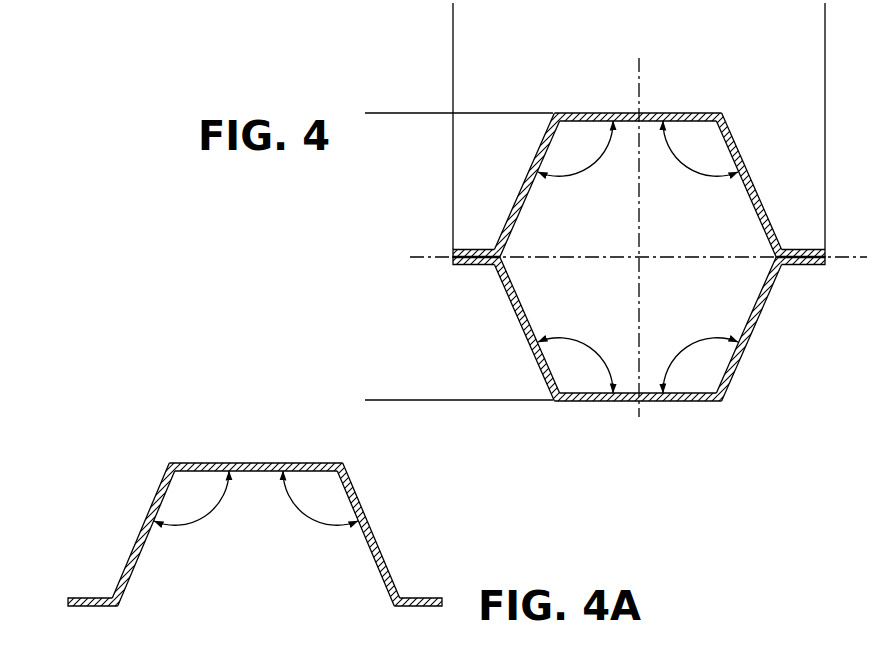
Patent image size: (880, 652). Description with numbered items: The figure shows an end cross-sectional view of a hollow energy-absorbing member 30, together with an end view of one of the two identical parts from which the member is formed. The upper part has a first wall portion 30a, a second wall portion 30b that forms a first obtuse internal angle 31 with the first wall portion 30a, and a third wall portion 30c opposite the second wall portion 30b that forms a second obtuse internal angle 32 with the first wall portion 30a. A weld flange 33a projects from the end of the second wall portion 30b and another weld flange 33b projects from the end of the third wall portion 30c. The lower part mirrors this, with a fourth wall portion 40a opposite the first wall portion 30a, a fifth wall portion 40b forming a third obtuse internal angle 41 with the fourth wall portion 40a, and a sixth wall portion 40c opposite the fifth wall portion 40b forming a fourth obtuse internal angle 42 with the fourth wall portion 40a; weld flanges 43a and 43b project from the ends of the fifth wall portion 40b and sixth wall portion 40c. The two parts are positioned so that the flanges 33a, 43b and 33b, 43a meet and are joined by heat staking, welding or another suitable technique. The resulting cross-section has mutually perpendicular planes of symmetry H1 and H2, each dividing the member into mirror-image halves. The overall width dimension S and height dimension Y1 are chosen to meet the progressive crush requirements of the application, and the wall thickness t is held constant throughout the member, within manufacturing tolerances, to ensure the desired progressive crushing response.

In FIG. 4, the energy-absorbing member 30 is at (639, 143).
In FIG. 4, the first wall portion 30a is at (662, 112).
In FIG. 4A, the first wall portion 30a is at (262, 462).
In FIG. 4, the second wall portion 30b is at (528, 174).
In FIG. 4A, the second wall portion 30b is at (136, 536).
In FIG. 4, the third wall portion 30c is at (760, 191).
In FIG. 4A, the third wall portion 30c is at (377, 544).
In FIG. 4, the first obtuse internal angle 31 is at (590, 166).
In FIG. 4A, the first obtuse internal angle 31 is at (207, 515).
In FIG. 4, the second obtuse internal angle 32 is at (688, 166).
In FIG. 4A, the second obtuse internal angle 32 is at (294, 506).
In FIG. 4, the weld flange 33a is at (474, 249).
In FIG. 4A, the weld flange 33a is at (97, 597).
In FIG. 4, the weld flange 33b is at (800, 249).
In FIG. 4A, the weld flange 33b is at (416, 597).
In FIG. 4, the fourth wall portion 40a is at (683, 402).
In FIG. 4, the fifth wall portion 40b is at (755, 326).
In FIG. 4, the sixth wall portion 40c is at (517, 313).
In FIG. 4, the third obtuse internal angle 41 is at (683, 353).
In FIG. 4, the fourth obtuse internal angle 42 is at (597, 353).
In FIG. 4, the weld flange 43a is at (800, 266).
In FIG. 4, the weld flange 43b is at (478, 266).
In FIG. 4, the width dimension S is at (825, 15).
In FIG. 4, the height dimension Y1 is at (377, 113).
In FIG. 4, the plane of symmetry H1 is at (420, 256).
In FIG. 4, the plane of symmetry H2 is at (637, 72).
In FIG. 4A, the wall thickness t is at (318, 500).